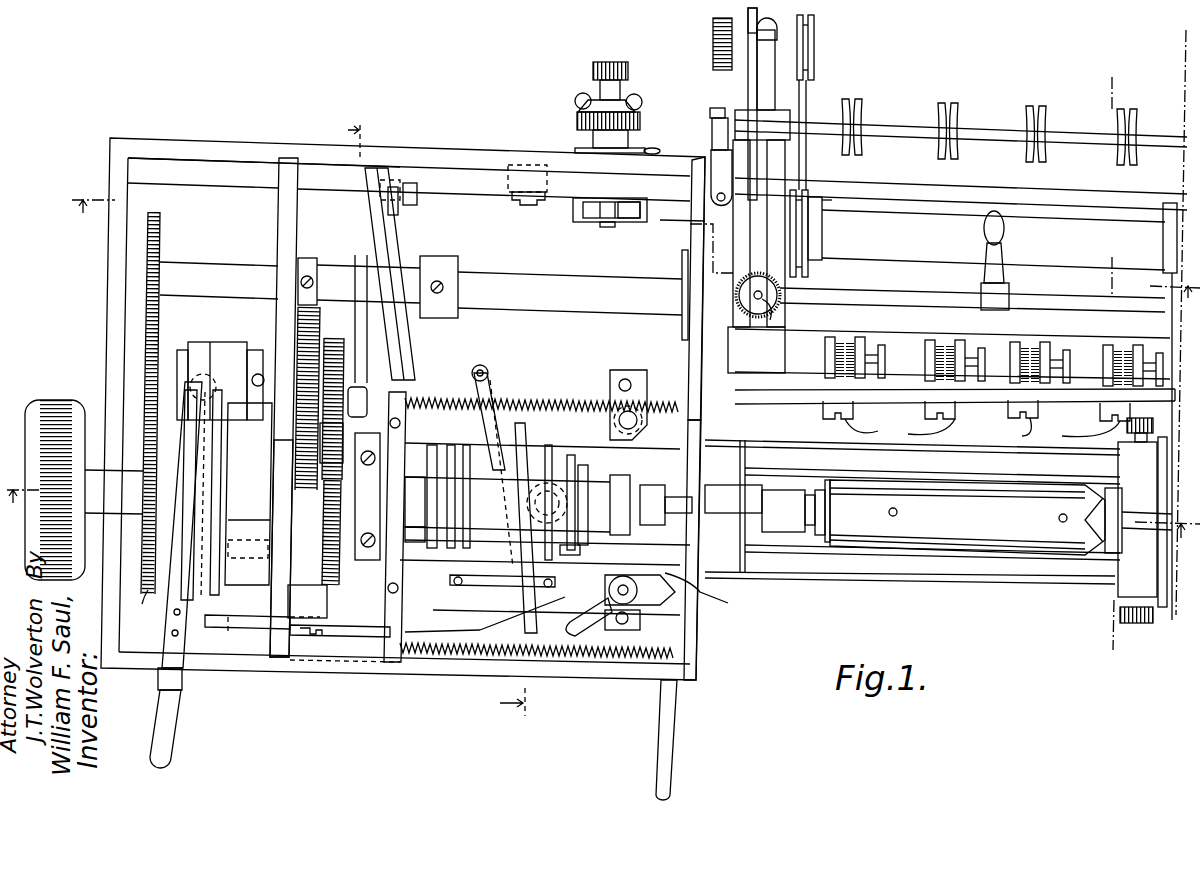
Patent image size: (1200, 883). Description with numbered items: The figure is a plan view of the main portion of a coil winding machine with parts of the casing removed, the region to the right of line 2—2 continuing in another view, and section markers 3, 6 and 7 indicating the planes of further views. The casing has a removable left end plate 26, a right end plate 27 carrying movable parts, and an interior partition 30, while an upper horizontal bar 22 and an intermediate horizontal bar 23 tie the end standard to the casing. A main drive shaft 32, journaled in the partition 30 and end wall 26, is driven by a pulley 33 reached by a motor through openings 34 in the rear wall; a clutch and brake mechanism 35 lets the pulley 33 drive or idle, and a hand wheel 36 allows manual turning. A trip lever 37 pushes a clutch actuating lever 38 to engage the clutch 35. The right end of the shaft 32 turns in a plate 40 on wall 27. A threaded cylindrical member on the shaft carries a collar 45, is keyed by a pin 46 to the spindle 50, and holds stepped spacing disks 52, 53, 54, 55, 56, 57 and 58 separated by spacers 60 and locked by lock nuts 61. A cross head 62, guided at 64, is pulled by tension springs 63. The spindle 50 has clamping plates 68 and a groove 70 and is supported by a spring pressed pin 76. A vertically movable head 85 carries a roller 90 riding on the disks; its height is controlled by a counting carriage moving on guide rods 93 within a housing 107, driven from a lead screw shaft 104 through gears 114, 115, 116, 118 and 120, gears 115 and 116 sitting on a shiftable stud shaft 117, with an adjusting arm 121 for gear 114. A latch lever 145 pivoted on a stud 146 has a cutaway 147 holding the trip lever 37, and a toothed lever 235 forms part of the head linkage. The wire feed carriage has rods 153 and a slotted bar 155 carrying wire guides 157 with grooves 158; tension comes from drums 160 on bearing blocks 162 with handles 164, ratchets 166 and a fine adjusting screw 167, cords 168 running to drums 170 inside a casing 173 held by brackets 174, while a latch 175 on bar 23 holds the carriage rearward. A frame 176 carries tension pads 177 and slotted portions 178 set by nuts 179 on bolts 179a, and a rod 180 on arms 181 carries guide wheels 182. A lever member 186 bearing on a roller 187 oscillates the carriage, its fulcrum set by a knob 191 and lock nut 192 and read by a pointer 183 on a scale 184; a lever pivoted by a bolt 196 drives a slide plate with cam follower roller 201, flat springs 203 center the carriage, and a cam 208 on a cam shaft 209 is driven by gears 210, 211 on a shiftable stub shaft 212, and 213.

The section line 2— 2 is at (1146, 351).
The section line 3- 3 is at (601, 525).
The section line 6- 6 is at (636, 259).
The section line 7- 7 is at (430, 419).
The upper horizontal bar 22 is at (922, 192).
The intermediate horizontal bar 23 is at (905, 298).
The end plate portion 26 is at (110, 326).
The end plate portion 27 is at (702, 636).
The interior partition 30 is at (279, 227).
The main drive shaft 32 is at (166, 487).
The pulley 33 is at (205, 442).
The openings 34 is at (232, 142).
The clutch and brake mechanism 35 is at (248, 494).
The hand wheel 36 is at (52, 400).
The trip lever 37 is at (172, 712).
The clutch actuating lever 38 is at (248, 562).
The plate 40 is at (707, 426).
The collar 45 is at (412, 477).
The pin 46 is at (430, 542).
The spindle 50 is at (718, 500).
The spacing disk 52 is at (608, 585).
The spacing disk 53 is at (572, 555).
The spacing disk 54 is at (570, 455).
The central disk 55 is at (547, 445).
The spacing disk 56 is at (478, 440).
The spacing disk 57 is at (451, 445).
The spacing disk 58 is at (450, 579).
The spacers 60 is at (583, 466).
The lock nuts 61 is at (405, 488).
The cross head 62 is at (430, 445).
The tension springs 63 is at (565, 400).
The guide 64 is at (395, 668).
The plates 68 is at (965, 556).
The groove 70 is at (810, 532).
The supporting pin 76 is at (1145, 515).
The vertically movable head 85 is at (633, 370).
The roller 90 is at (540, 482).
The guide rods 93 is at (708, 594).
The lead screw shaft 104 is at (330, 575).
The counting plate carriage housing 107 is at (1052, 584).
The gear 114 is at (327, 592).
The gear 115 is at (338, 338).
The gear 116 is at (298, 326).
The shiftable stud shaft 117 is at (296, 365).
The gear 118 is at (300, 445).
The gear 120 is at (322, 470).
The adjusting arm 121 is at (534, 628).
The latch lever 145 is at (385, 643).
The stud 146 is at (340, 640).
The cutaway portion 147 is at (262, 631).
The rods 153 is at (757, 96).
The slotted bar 155 is at (800, 394).
The wire guide members 157 is at (855, 408).
The grooves 158 is at (982, 431).
The small drums 160 is at (814, 30).
The bearing blocks 162 is at (757, 70).
The handles 164 is at (713, 36).
The ratchets 166 is at (748, 12).
The fine adjusting screw 167 is at (775, 27).
The cords 168 is at (806, 100).
The drums 170 is at (822, 230).
The casing 173 is at (993, 240).
The brackets 174 is at (822, 212).
The latch 175 is at (985, 245).
The frame 176 is at (808, 345).
The wire tensioning pads 177 is at (925, 345).
The slotted portions 178 is at (797, 190).
The nuts 179 is at (780, 292).
The bolts 179a is at (770, 322).
The rod 180 is at (888, 125).
The arms 181 is at (710, 113).
The wire guide wheels 182 is at (860, 100).
The pointer 183 is at (650, 148).
The graduated scale 184 is at (712, 150).
The lever member 186 is at (622, 222).
The roller 187 is at (603, 222).
The knob 191 is at (577, 122).
The lock nut 192 is at (576, 100).
The bolt 196 is at (520, 192).
The cam follower roller 201 is at (388, 200).
The flat springs 203 is at (417, 205).
The cam 208 is at (410, 340).
The cam shaft 209 is at (213, 263).
The gear 210 is at (162, 295).
The gear 211 is at (195, 376).
The shiftable stub shaft 212 is at (185, 410).
The gear 213 is at (148, 596).
The lever 235 is at (675, 742).